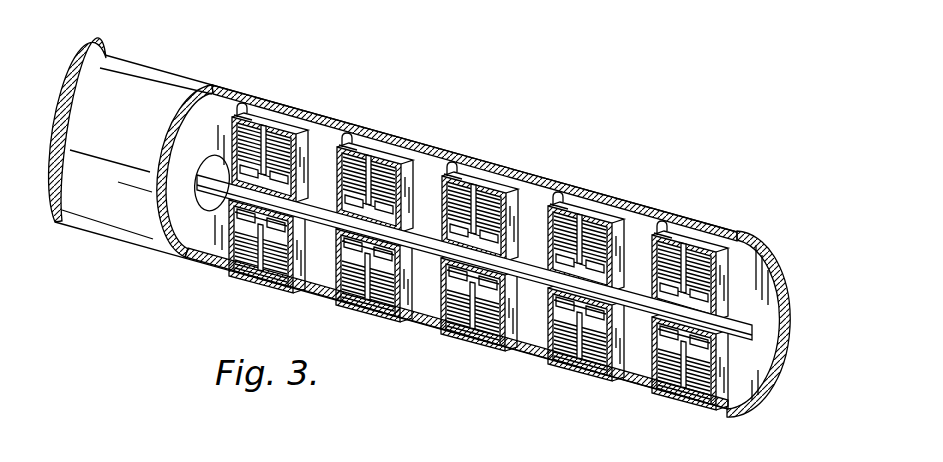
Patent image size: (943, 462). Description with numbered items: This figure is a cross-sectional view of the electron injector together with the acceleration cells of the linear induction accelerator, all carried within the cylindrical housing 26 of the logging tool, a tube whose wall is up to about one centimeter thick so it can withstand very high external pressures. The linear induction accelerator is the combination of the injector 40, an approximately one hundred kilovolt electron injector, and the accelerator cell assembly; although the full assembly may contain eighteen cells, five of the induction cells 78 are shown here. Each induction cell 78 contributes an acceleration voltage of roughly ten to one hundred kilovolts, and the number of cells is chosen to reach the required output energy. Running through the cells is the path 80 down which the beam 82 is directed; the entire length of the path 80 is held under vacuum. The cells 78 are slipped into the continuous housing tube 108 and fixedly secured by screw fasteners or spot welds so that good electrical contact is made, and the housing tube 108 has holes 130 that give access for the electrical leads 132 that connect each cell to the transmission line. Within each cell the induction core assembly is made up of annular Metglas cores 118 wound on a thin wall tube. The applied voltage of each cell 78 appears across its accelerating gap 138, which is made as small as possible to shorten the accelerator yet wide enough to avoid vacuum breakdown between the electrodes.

The housing 26 is at (137, 232).
The injector 40 is at (188, 71).
The induction cell 78 is at (300, 108).
The path 80 is at (570, 190).
The beam 82 is at (752, 362).
The housing tube 108 is at (472, 146).
The Metglas core 118 is at (663, 387).
The hole 130 is at (350, 128).
The electrical lead 132 is at (268, 99).
The accelerating gap 138 is at (682, 214).